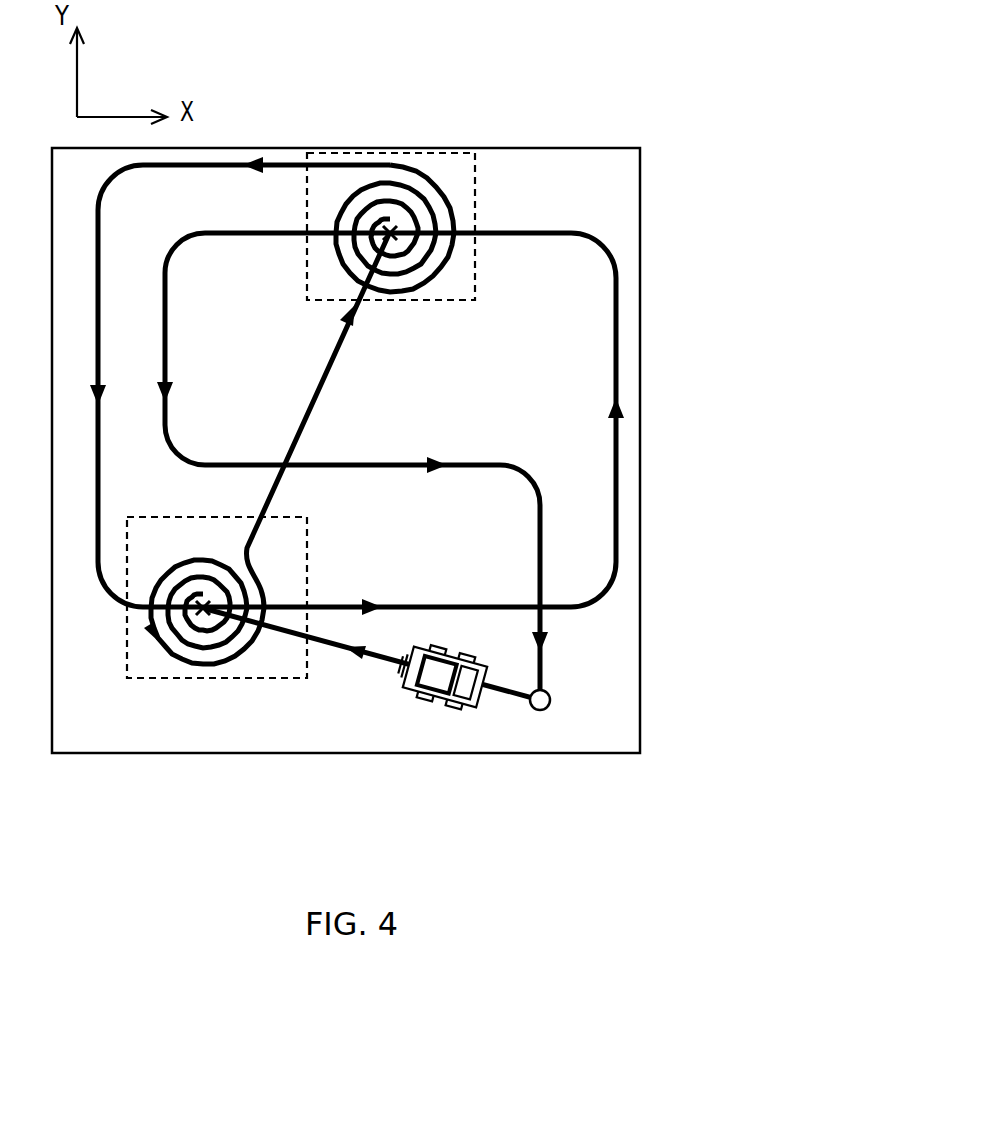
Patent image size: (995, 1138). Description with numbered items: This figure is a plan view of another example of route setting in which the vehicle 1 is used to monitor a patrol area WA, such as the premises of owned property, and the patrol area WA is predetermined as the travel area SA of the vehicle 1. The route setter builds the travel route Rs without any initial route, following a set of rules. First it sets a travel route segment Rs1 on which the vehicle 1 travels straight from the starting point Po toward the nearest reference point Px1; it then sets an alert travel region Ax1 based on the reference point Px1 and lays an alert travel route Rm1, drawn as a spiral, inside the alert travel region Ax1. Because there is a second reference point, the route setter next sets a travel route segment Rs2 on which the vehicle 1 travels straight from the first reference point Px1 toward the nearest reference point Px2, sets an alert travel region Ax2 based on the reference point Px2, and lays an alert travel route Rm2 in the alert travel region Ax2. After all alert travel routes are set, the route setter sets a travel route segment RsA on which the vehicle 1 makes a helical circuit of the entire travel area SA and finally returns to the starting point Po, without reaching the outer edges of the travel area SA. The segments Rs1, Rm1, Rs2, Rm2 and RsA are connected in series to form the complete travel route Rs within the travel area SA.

The patrol area WA is at (346, 404).
The travel area SA is at (563, 148).
The travel route segment RsA is at (100, 211).
The travel route Rs is at (189, 376).
The alert travel route Rm2 is at (343, 212).
The alert travel region Ax2 is at (476, 193).
The reference point Px2 is at (405, 242).
The travel route segment Rs2 is at (323, 383).
The alert travel route Rm1 is at (193, 668).
The alert travel region Ax1 is at (308, 548).
The reference point Px1 is at (210, 604).
The travel route segment Rs1 is at (377, 663).
The vehicle 1 is at (412, 710).
The starting point Po is at (545, 709).